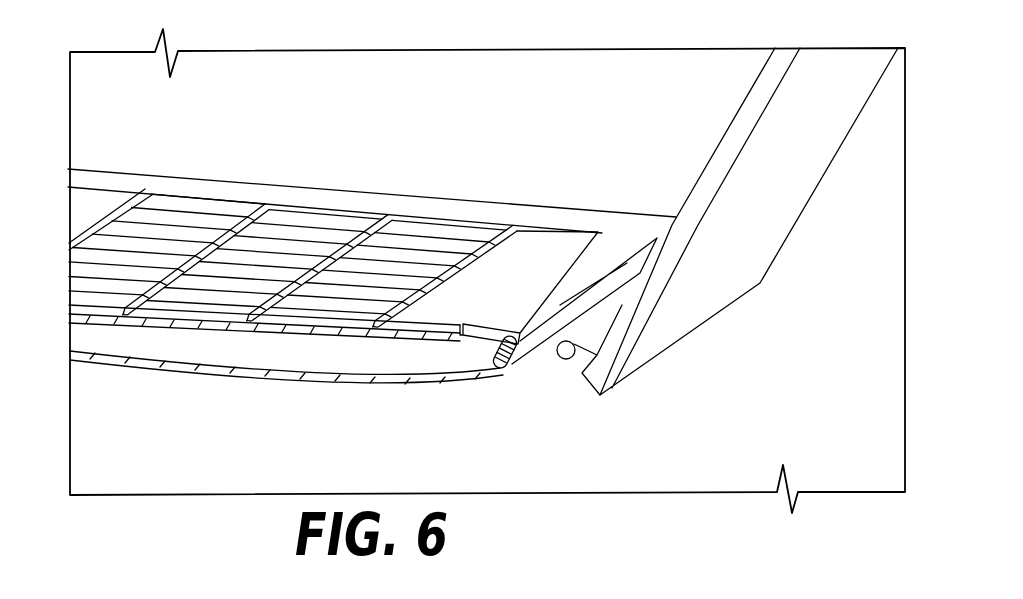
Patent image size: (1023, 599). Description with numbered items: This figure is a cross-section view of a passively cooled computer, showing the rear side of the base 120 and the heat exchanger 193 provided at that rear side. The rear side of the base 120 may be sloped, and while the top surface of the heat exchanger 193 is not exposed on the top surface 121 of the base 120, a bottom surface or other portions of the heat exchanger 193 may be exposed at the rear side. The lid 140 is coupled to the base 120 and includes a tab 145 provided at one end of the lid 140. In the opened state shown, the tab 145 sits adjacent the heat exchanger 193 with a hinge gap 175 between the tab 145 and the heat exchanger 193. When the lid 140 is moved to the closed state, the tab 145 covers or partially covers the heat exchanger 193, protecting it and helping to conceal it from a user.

The base 120 is at (213, 180).
The top surface 121 is at (462, 212).
The heat exchanger 193 is at (593, 297).
The lid 140 is at (850, 130).
The hinge gap 175 is at (538, 351).
The tab 145 is at (571, 352).